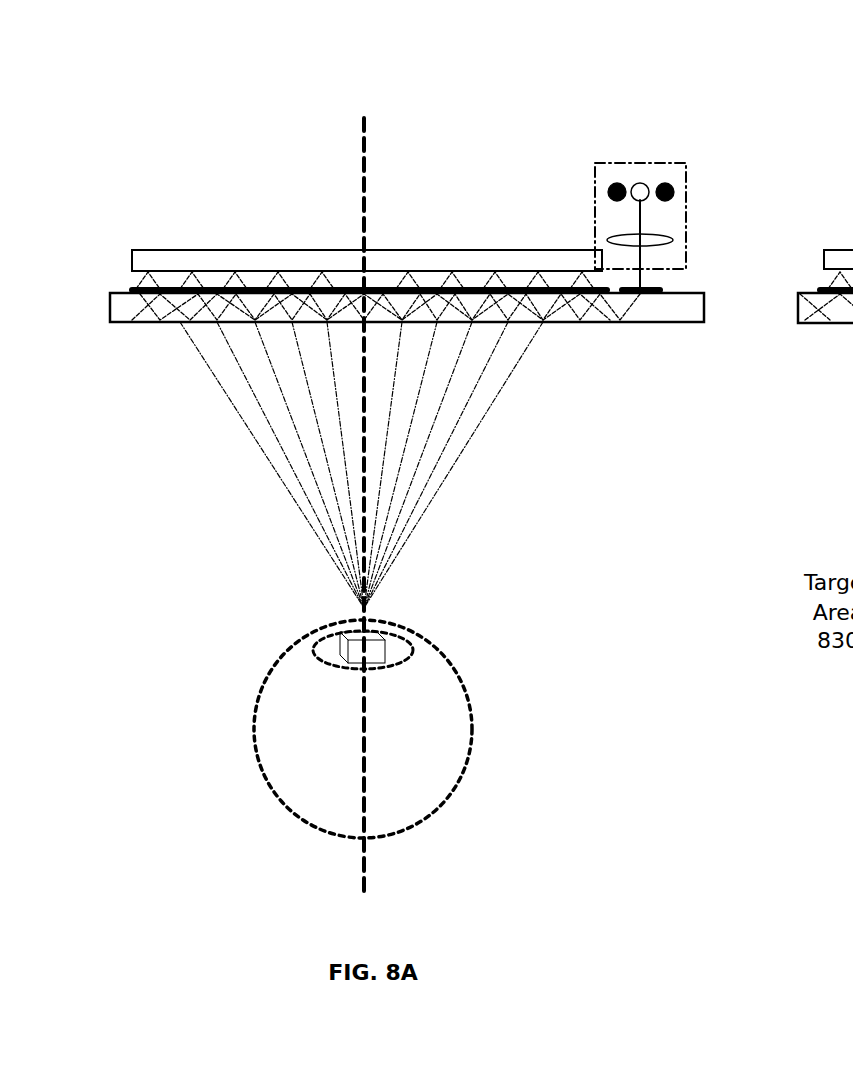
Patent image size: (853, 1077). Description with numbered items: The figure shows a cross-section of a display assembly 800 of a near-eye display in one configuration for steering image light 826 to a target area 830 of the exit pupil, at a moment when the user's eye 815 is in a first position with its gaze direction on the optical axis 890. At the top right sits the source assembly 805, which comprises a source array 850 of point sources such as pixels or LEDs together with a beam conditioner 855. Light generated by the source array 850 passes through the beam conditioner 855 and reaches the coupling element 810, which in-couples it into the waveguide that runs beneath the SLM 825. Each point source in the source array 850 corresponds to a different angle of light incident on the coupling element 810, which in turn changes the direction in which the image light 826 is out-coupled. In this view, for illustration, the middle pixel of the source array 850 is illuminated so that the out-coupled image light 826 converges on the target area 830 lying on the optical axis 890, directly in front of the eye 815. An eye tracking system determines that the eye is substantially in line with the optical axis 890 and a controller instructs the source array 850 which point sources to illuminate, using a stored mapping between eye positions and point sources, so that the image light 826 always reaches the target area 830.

The display assembly 800 is at (228, 224).
The SLM 825 is at (315, 250).
The beam conditioner 855 is at (607, 240).
The source array 850 is at (642, 184).
The source assembly 805 is at (688, 244).
The coupling element 810 is at (657, 294).
The image light 826 is at (262, 448).
The target area 830 is at (405, 636).
The eye 815 is at (262, 768).
The optical axis 890 is at (368, 876).